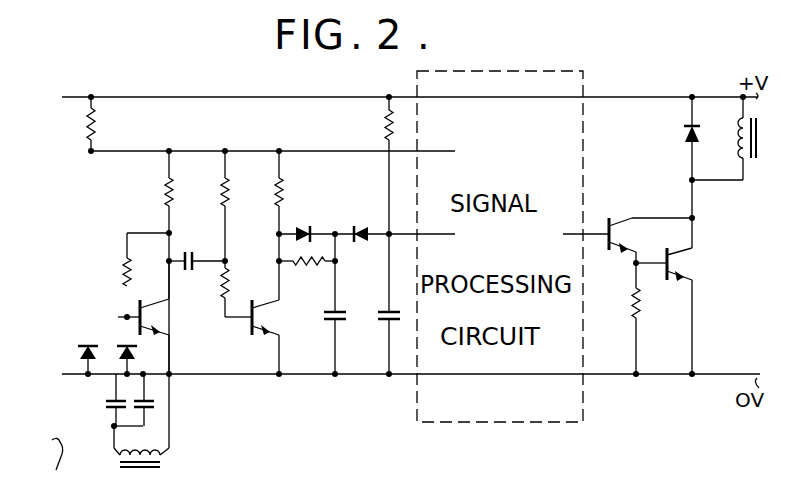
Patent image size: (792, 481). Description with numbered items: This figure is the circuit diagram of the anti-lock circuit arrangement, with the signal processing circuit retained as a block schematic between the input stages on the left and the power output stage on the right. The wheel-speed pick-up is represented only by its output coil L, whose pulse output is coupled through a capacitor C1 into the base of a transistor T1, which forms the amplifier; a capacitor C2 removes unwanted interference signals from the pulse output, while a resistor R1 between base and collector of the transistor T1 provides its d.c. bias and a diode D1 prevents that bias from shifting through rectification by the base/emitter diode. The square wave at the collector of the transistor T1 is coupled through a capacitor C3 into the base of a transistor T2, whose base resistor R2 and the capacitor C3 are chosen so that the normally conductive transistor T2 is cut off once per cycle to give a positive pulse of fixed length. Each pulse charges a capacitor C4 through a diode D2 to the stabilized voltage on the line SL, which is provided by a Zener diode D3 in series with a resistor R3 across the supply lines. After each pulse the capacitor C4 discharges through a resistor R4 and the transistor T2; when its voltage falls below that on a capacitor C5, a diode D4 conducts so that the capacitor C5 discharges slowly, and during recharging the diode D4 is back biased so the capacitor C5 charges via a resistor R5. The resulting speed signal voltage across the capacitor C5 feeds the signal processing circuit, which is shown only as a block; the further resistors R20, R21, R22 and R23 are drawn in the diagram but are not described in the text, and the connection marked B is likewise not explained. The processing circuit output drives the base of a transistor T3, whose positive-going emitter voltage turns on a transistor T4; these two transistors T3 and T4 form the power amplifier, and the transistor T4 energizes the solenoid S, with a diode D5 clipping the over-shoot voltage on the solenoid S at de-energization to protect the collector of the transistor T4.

The resistor R3 is at (75, 124).
The line SL is at (116, 150).
The resistor R20 is at (145, 192).
The resistor R21 is at (205, 206).
The resistor R22 is at (259, 192).
The capacitor C3 is at (197, 244).
The resistor R1 is at (114, 259).
The transistor T1 is at (155, 318).
The Zener diode D3 is at (87, 345).
The diode D1 is at (130, 350).
The capacitor C1 is at (106, 403).
The capacitor C2 is at (156, 403).
The output coil L is at (162, 461).
The terminal B is at (70, 460).
The base resistor R2 is at (241, 289).
The transistor T2 is at (262, 318).
The resistor R4 is at (307, 276).
The capacitor C4 is at (328, 316).
The capacitor C5 is at (382, 316).
The diode D2 is at (313, 227).
The diode D4 is at (357, 227).
The resistor R5 is at (372, 165).
The diode D5 is at (676, 138).
The solenoid S is at (757, 138).
The transistor T3 is at (618, 236).
The transistor T4 is at (676, 262).
The resistor R23 is at (630, 317).